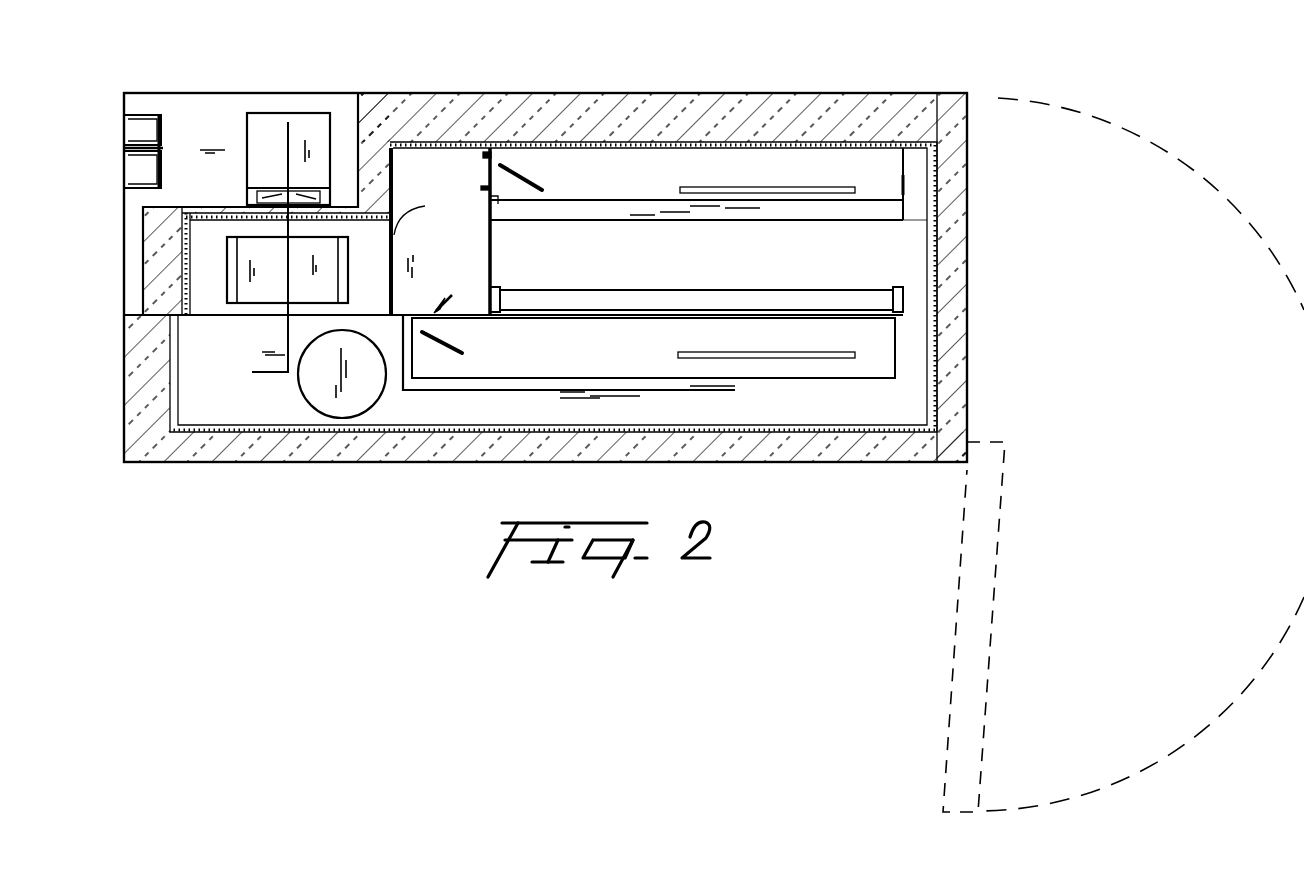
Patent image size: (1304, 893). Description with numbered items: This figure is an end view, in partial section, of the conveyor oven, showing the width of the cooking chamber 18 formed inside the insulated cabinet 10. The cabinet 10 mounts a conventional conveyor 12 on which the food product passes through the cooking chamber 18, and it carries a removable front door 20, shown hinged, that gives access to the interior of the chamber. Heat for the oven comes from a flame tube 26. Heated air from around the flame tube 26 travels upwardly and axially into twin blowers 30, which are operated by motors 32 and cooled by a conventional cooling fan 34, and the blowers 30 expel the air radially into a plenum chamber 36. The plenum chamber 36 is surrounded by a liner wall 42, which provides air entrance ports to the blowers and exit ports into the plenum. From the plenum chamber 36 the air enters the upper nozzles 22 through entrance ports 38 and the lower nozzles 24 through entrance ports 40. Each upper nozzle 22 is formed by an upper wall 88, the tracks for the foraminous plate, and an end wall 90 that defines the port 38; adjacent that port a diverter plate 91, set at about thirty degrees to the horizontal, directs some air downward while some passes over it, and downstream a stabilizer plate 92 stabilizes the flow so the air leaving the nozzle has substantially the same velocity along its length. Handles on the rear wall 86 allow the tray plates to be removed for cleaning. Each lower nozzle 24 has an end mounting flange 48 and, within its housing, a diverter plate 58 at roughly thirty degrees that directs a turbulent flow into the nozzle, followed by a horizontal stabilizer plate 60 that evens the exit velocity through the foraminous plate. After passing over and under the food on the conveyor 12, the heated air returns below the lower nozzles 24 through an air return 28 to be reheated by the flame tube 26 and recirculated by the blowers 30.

The insulated cabinet 10 is at (846, 92).
The conveyor 12 is at (690, 289).
The cooking chamber 18 is at (802, 265).
The front door 20 is at (950, 170).
The upper nozzles 22 is at (645, 180).
The lower nozzles 24 is at (579, 355).
The flame tube 26 is at (310, 388).
The air return 28 is at (804, 410).
The blowers 30 is at (343, 272).
The motors 32 is at (247, 128).
The cooling fan 34 is at (166, 128).
The plenum chamber 36 is at (452, 244).
The entrance ports 38 is at (488, 155).
The entrance ports 40 is at (448, 303).
The liner wall 42 is at (488, 213).
The end mounting flange 48 is at (904, 292).
The diverter plate 58 is at (448, 352).
The stabilizer plate 60 is at (728, 352).
The rear wall 86 is at (905, 183).
The upper wall 88 is at (698, 165).
The end wall 90 is at (493, 199).
The diverter plate 91 is at (528, 181).
The stabilizer plate 92 is at (782, 190).